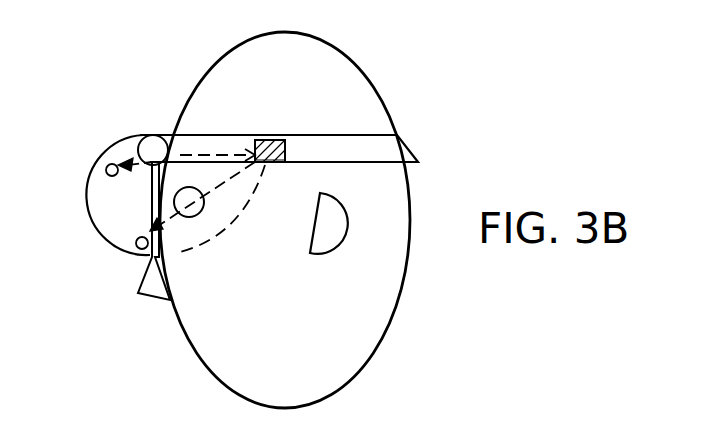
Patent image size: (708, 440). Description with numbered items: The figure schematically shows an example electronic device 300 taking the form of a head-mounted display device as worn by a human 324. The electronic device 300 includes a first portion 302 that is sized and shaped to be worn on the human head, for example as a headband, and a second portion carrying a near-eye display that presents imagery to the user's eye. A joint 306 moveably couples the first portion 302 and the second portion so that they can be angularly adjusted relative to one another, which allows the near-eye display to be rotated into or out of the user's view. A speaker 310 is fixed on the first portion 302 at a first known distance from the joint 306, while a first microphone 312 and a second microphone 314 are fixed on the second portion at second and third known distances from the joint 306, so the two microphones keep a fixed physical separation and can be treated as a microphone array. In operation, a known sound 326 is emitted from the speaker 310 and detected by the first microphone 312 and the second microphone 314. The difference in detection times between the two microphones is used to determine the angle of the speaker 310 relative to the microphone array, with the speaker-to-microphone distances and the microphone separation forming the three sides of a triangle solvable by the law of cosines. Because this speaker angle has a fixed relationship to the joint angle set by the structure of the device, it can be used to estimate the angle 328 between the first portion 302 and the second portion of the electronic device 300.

The electronic device 300 is at (158, 69).
The first portion 302 is at (293, 134).
The joint 306 is at (155, 134).
The speaker 310 is at (270, 162).
The microphone 312 is at (108, 163).
The microphone 314 is at (142, 250).
The human 324 is at (321, 38).
The known sound 326 is at (208, 190).
The angle 328 is at (192, 248).